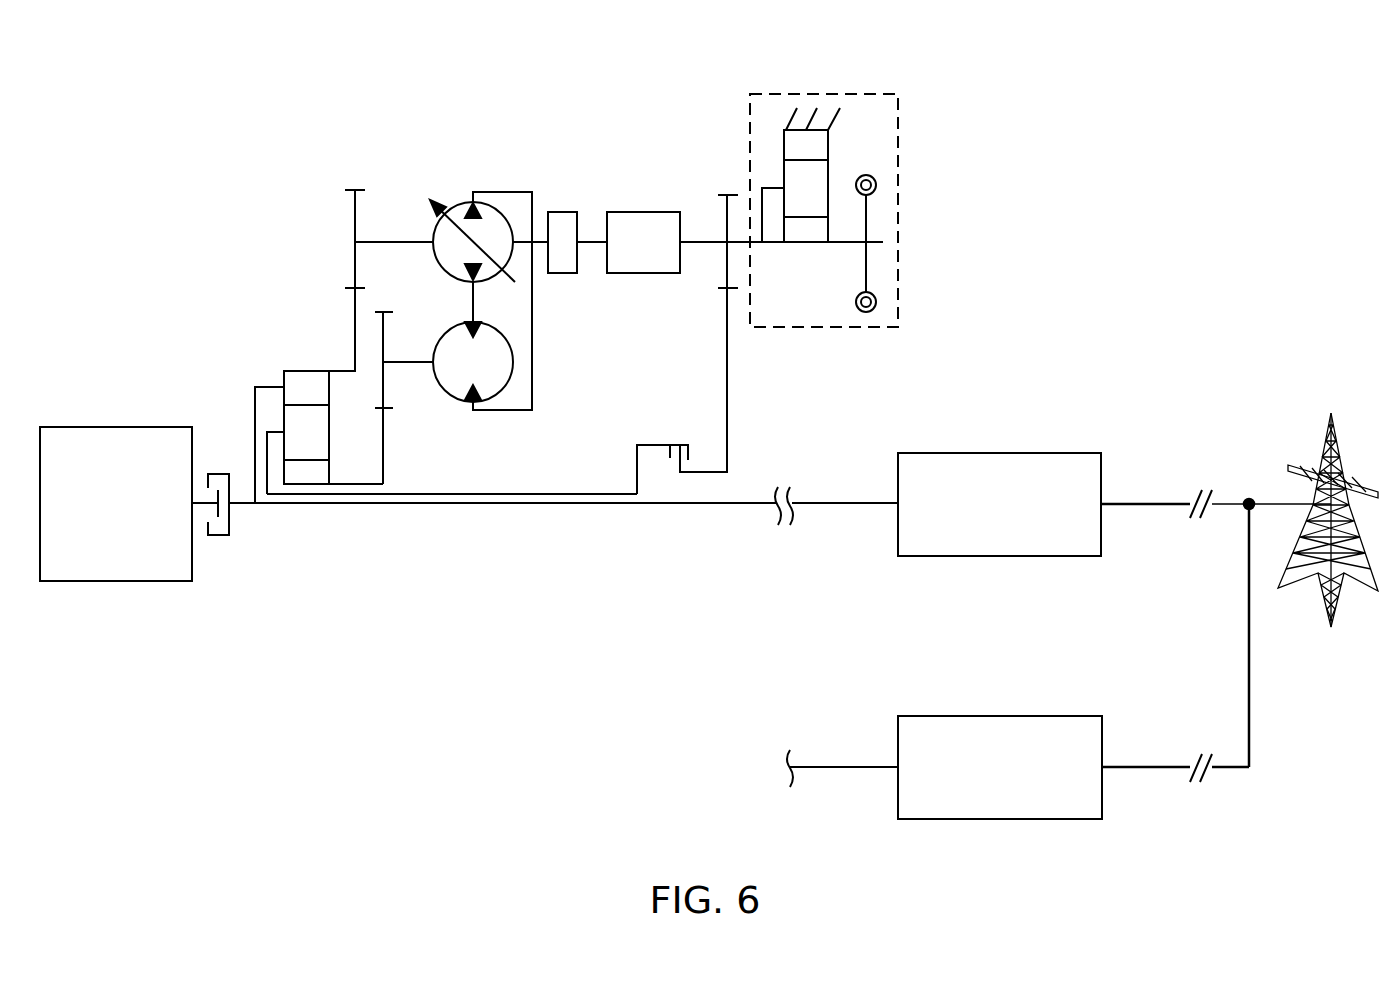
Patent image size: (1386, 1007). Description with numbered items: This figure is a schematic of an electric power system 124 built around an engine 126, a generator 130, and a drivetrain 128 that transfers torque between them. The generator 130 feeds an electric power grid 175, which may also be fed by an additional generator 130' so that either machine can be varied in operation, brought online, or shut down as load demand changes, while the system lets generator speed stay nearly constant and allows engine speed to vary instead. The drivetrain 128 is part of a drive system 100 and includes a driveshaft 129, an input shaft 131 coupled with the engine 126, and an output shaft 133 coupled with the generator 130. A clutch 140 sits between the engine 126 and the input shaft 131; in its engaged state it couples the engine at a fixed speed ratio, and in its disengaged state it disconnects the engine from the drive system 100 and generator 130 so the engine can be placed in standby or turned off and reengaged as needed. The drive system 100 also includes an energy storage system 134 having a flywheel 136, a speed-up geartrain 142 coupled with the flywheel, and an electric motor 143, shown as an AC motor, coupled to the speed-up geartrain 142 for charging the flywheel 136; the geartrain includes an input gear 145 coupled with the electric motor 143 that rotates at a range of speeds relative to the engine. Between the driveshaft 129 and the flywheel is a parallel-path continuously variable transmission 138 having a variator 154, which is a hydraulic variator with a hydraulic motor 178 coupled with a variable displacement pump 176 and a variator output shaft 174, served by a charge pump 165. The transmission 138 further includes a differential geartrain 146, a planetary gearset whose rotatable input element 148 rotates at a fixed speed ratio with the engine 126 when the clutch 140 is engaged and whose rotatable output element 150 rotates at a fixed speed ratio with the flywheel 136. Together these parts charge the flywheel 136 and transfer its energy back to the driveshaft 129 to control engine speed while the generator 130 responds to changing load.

The drive system 100 is at (502, 61).
The electric power system 124 is at (1050, 148).
The engine 126 is at (107, 427).
The drivetrain 128 is at (496, 533).
The driveshaft 129 is at (656, 506).
The generator 130 is at (999, 477).
The additional generator 130' is at (944, 738).
The input shaft 131 is at (250, 506).
The output shaft 133 is at (760, 506).
The energy storage system 134 is at (471, 128).
The flywheel 136 is at (877, 185).
The parallel-path continuously variable transmission 138 is at (483, 438).
The clutch 140 is at (221, 452).
The speed-up geartrain 142 is at (783, 243).
The electric motor 143 is at (643, 212).
The input gear 145 is at (784, 168).
The differential geartrain 146 is at (424, 366).
The rotatable input element 148 is at (284, 372).
The rotatable output element 150 is at (303, 486).
The variator 154 is at (546, 322).
The charge pump 165 is at (565, 212).
The variator output shaft 174 is at (408, 362).
The electric power grid 175 is at (1294, 681).
The variable displacement pump 176 is at (457, 204).
The hydraulic motor 178 is at (436, 385).